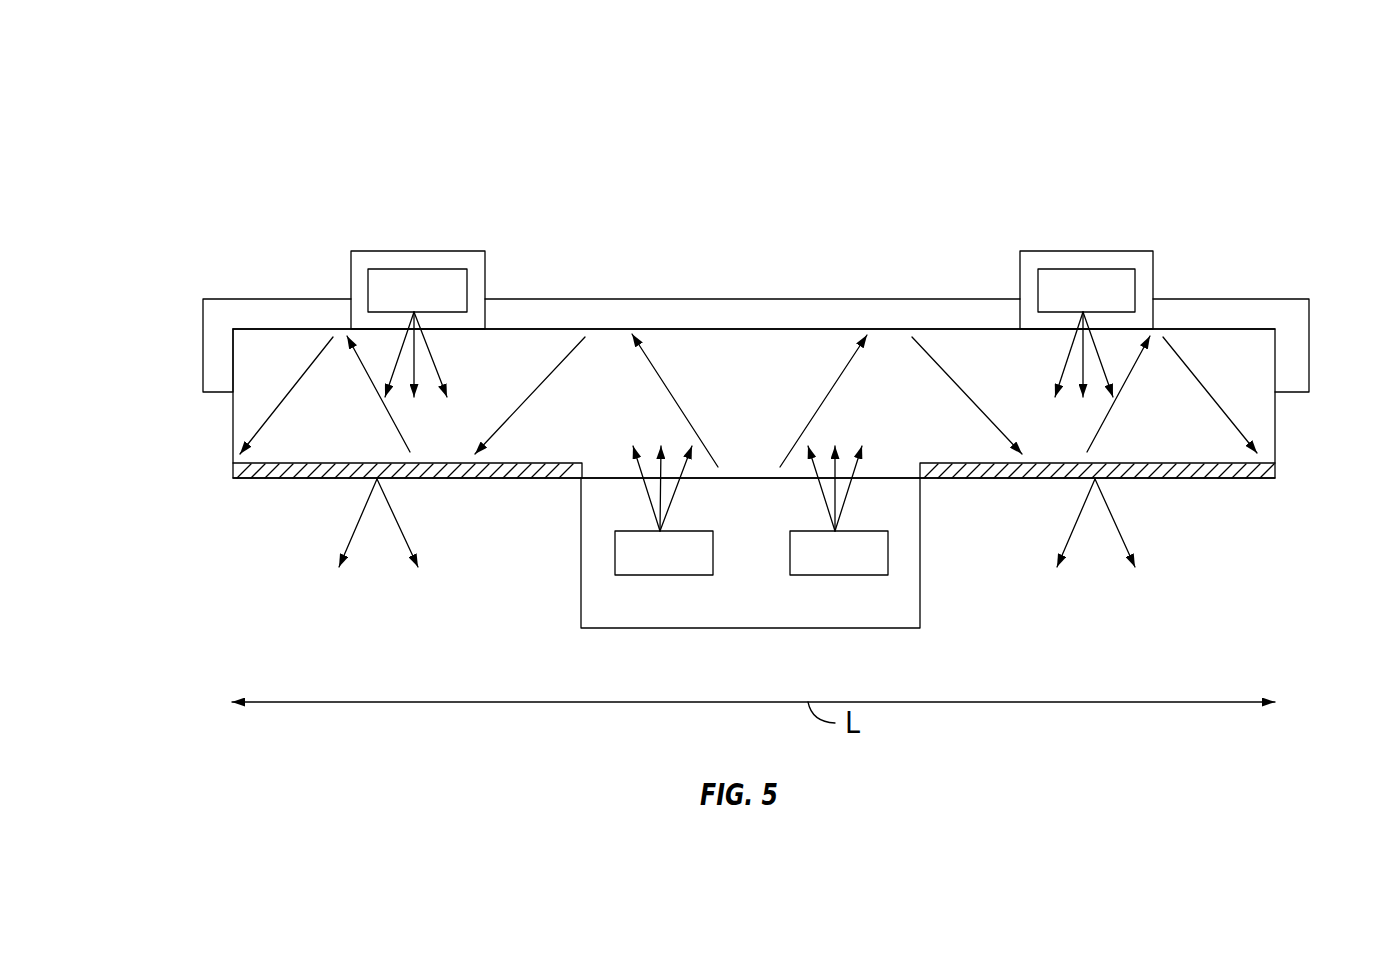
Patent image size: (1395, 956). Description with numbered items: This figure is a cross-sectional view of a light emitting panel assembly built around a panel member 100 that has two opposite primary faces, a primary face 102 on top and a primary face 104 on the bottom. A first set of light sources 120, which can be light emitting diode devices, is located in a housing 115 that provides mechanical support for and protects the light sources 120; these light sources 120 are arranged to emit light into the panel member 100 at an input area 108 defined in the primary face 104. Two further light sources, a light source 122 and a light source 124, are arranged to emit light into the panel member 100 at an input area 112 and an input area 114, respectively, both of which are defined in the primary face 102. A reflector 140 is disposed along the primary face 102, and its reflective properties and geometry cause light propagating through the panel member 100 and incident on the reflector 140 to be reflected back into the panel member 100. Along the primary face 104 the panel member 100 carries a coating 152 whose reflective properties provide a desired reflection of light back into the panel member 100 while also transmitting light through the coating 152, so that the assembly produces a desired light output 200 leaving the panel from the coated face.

The panel member 100 is at (1258, 453).
The primary face 102 is at (553, 329).
The primary face 104 is at (483, 479).
The input area 108 is at (848, 432).
The input area 112 is at (1062, 412).
The input area 114 is at (470, 372).
The housing 115 is at (725, 628).
The light sources 120 is at (615, 558).
The light source 122 is at (1038, 285).
The light source 124 is at (368, 285).
The reflector 140 is at (230, 299).
The coating 152 is at (233, 473).
The light output 200 is at (340, 585).